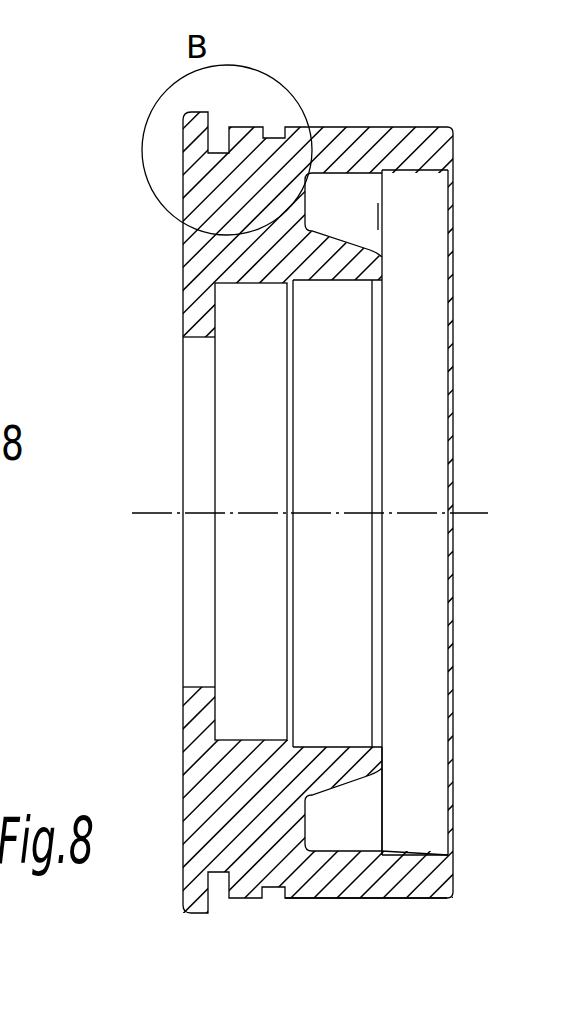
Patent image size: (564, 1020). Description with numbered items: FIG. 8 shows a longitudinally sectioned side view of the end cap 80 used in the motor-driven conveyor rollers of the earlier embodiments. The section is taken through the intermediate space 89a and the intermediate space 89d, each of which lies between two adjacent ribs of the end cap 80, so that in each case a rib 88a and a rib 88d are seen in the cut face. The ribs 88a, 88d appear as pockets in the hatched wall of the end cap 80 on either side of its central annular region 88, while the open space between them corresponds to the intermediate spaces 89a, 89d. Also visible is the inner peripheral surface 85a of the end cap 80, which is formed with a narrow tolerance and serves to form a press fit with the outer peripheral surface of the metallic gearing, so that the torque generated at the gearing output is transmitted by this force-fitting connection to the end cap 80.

The end cap 80 is at (227, 263).
The annular chamber 88 is at (422, 197).
The intermediate space 89a is at (405, 222).
The rib 88a is at (363, 229).
The rib 88d is at (362, 842).
The intermediate space 89d is at (398, 790).
The inner peripheral surface 85a is at (424, 845).